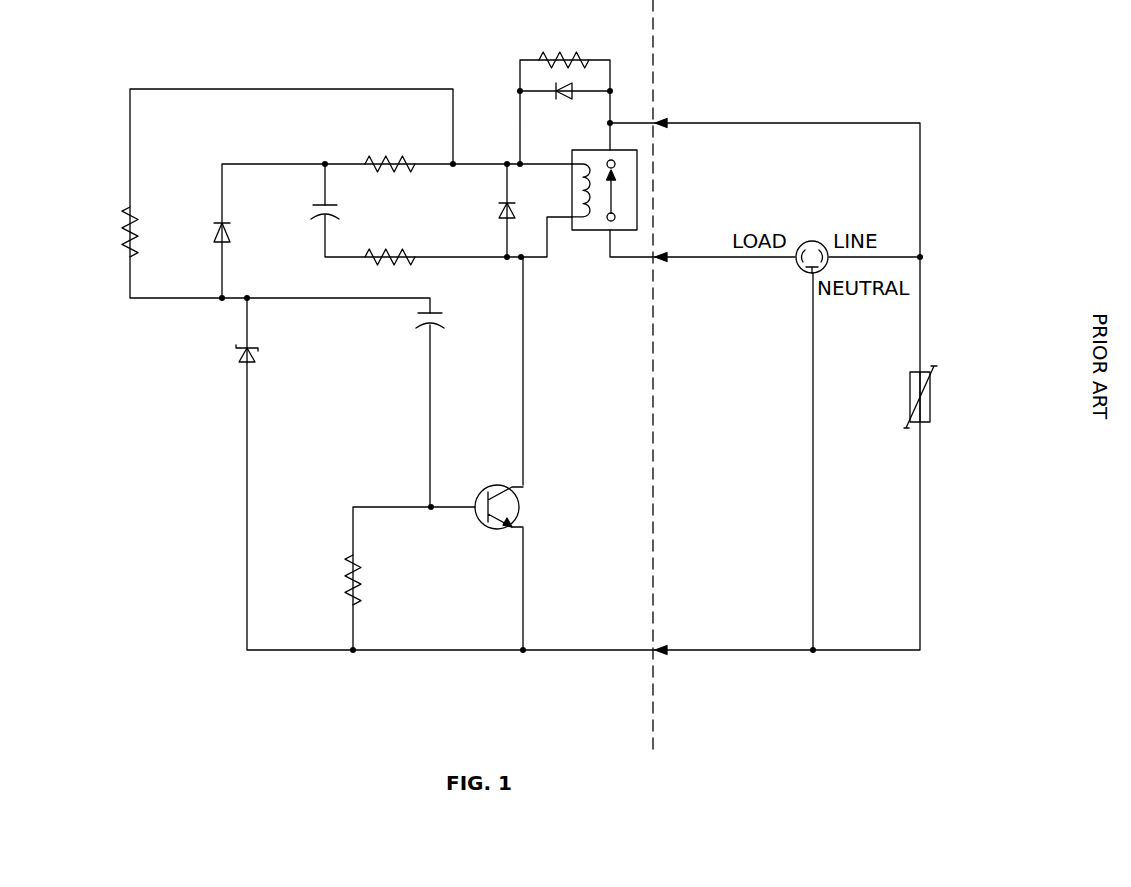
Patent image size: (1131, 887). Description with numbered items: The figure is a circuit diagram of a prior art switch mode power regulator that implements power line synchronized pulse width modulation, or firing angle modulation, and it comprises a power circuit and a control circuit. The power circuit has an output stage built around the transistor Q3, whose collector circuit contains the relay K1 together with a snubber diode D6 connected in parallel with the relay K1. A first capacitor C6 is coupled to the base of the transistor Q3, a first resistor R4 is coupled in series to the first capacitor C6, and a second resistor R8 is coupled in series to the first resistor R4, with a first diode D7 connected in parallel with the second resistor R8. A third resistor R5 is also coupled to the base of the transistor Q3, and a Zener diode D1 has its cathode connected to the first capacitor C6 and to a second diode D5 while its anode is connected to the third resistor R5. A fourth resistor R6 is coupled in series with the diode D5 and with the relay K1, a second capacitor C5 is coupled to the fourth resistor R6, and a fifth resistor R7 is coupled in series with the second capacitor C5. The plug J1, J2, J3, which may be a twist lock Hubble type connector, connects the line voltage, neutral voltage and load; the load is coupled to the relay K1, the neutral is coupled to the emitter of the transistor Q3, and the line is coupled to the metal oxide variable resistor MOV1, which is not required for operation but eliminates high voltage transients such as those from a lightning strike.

The first resistor R4 is at (98, 232).
The second diode D5 is at (207, 222).
The second capacitor C5 is at (291, 215).
The fourth resistor R6 is at (390, 138).
The fifth resistor R7 is at (390, 231).
The snubber diode D6 is at (520, 198).
The second resistor R8 is at (563, 34).
The first diode D7 is at (561, 117).
The relay K1 is at (669, 190).
The plug J1 is at (671, 113).
The plug J2 is at (672, 246).
The plug J3 is at (673, 640).
The metal oxide variable resistor MOV1 is at (897, 387).
The Zener diode D1 is at (271, 349).
The first capacitor C6 is at (461, 324).
The transistor Q3 is at (547, 507).
The third resistor R5 is at (379, 580).